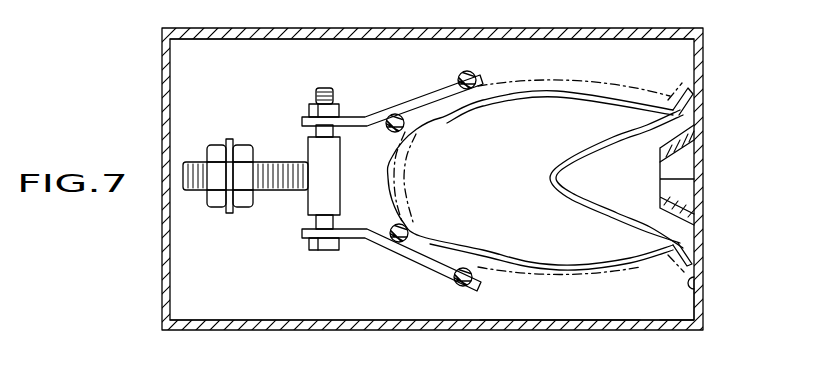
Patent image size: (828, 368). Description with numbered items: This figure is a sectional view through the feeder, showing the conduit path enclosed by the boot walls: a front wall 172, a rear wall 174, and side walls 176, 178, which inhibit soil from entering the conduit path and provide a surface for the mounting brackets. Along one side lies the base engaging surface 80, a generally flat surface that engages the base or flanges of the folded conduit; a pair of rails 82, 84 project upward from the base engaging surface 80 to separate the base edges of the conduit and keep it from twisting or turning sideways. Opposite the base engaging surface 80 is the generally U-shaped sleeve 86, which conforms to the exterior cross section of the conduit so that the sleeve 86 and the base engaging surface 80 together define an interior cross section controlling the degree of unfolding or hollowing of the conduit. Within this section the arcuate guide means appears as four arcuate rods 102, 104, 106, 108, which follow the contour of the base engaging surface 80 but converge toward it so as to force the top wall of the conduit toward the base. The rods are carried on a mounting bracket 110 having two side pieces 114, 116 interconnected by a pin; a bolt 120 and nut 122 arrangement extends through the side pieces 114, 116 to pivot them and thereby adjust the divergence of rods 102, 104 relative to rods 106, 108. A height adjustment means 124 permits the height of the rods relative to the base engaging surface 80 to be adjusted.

The base engaging surface 80 is at (697, 284).
The rail 82 is at (676, 198).
The rail 84 is at (678, 146).
The U-shaped sleeve 86 is at (403, 200).
The arcuate rod 102 is at (477, 76).
The arcuate rod 104 is at (403, 128).
The arcuate rod 106 is at (407, 230).
The arcuate rod 108 is at (471, 282).
The mounting bracket 110 is at (280, 105).
The side piece 114 is at (428, 90).
The side piece 116 is at (397, 255).
The bolt 120 is at (317, 88).
The nut 122 is at (340, 112).
The height adjustment means 124 is at (245, 137).
The front wall 172 is at (699, 316).
The rear wall 174 is at (163, 79).
The side wall 176 is at (477, 29).
The side wall 178 is at (557, 330).